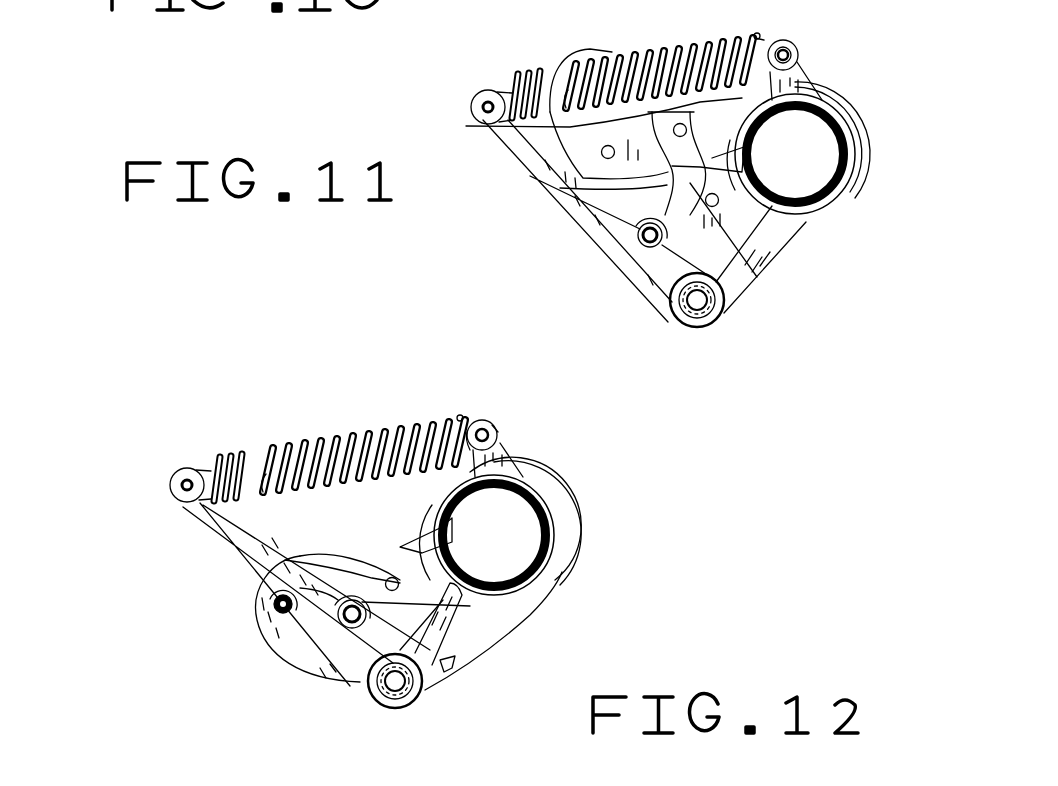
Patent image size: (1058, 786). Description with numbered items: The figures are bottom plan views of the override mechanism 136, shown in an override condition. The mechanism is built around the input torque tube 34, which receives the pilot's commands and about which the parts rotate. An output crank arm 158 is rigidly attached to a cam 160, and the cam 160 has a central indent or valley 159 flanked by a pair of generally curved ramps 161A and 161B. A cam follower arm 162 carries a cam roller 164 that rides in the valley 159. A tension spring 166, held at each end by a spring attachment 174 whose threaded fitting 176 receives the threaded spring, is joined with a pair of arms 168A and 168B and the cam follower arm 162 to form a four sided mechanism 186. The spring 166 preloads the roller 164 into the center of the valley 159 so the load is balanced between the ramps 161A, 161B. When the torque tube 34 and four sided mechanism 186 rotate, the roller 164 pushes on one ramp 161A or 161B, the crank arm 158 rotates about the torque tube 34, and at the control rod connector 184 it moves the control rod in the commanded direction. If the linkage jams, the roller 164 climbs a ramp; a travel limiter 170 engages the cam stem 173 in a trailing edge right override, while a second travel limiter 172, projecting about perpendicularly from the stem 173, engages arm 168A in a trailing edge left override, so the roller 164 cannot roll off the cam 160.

In FIG. 11, the torque tube 34 is at (856, 151).
In FIG. 12, the torque tube 34 is at (547, 543).
In FIG. 11, the override mechanism 136 is at (455, 90).
In FIG. 12, the override mechanism 136 is at (152, 476).
In FIG. 11, the output crank arm 158 is at (567, 60).
In FIG. 12, the output crank arm 158 is at (258, 612).
In FIG. 11, the indent or valley 159 is at (613, 185).
In FIG. 12, the indent or valley 159 is at (357, 680).
In FIG. 11, the cam 160 is at (623, 181).
In FIG. 12, the cam 160 is at (389, 576).
In FIG. 11, the first curved ramp 161A is at (480, 126).
In FIG. 12, the first curved ramp 161A is at (380, 633).
In FIG. 11, the second curved ramp 161B is at (637, 228).
In FIG. 12, the second curved ramp 161B is at (447, 665).
In FIG. 11, the cam follower arm 162 is at (507, 150).
In FIG. 12, the cam follower arm 162 is at (192, 512).
In FIG. 11, the cam roller 164 is at (668, 311).
In FIG. 12, the cam roller 164 is at (372, 624).
In FIG. 11, the tension spring 166 is at (748, 33).
In FIG. 12, the tension spring 166 is at (358, 430).
In FIG. 11, the first arm 168A is at (790, 240).
In FIG. 12, the first arm 168A is at (505, 615).
In FIG. 11, the second arm 168B is at (823, 92).
In FIG. 12, the second arm 168B is at (530, 457).
In FIG. 11, the travel limiter 170 is at (688, 35).
In FIG. 12, the travel limiter 170 is at (398, 527).
In FIG. 11, the travel limiter 172 is at (748, 248).
In FIG. 12, the travel limiter 172 is at (490, 600).
In FIG. 11, the cam stem 173 is at (690, 236).
In FIG. 12, the cam stem 173 is at (396, 547).
In FIG. 11, the spring attachment 174 is at (517, 70).
In FIG. 12, the spring attachment 174 is at (198, 468).
In FIG. 12, the threaded fitting 176 is at (232, 450).
In FIG. 12, the control rod connector 184 is at (275, 598).
In FIG. 11, the four sided mechanism 186 is at (704, 352).
In FIG. 12, the four sided mechanism 186 is at (445, 405).